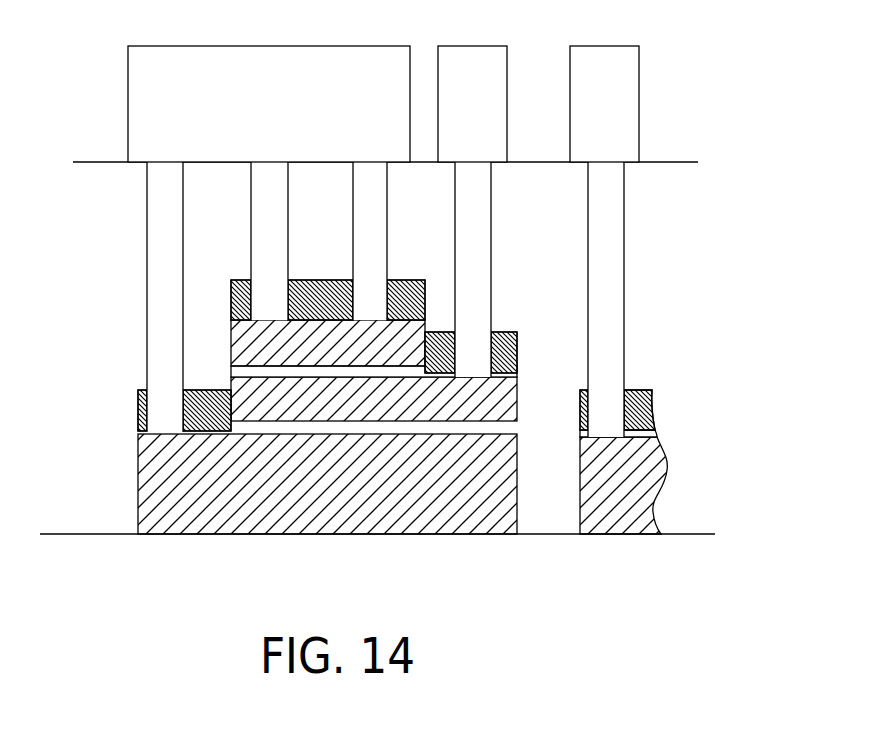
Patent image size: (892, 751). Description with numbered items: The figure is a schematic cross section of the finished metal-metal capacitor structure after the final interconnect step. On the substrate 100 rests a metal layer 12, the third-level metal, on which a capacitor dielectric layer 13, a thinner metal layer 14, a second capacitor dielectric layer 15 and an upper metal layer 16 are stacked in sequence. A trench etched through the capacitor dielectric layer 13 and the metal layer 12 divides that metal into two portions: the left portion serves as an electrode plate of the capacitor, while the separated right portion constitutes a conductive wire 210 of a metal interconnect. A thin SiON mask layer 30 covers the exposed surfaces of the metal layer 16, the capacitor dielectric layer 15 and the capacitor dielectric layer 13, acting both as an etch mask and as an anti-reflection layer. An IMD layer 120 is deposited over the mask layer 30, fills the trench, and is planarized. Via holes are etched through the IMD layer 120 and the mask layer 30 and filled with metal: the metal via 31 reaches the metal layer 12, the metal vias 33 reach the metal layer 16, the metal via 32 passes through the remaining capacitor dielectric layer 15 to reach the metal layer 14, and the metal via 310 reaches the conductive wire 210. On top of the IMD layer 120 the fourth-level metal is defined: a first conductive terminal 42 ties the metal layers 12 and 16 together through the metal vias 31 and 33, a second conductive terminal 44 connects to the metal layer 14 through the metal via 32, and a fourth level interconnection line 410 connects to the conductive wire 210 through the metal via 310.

The substrate 100 is at (358, 583).
The IMD layer 120 is at (758, 267).
The metal layer 12 is at (347, 500).
The capacitor dielectric layer 13 is at (647, 433).
The metal layer 14 is at (347, 413).
The capacitor dielectric layer 15 is at (233, 372).
The metal layer 16 is at (347, 357).
The conductive wire 210 is at (640, 500).
The mask layer 30 is at (389, 280).
The metal via 31 is at (160, 198).
The metal via 32 is at (478, 198).
The metal via 33 is at (372, 198).
The metal via 310 is at (611, 198).
The first conductive terminal 42 is at (287, 118).
The second conductive terminal 44 is at (488, 118).
The fourth level interconnection line 410 is at (632, 118).